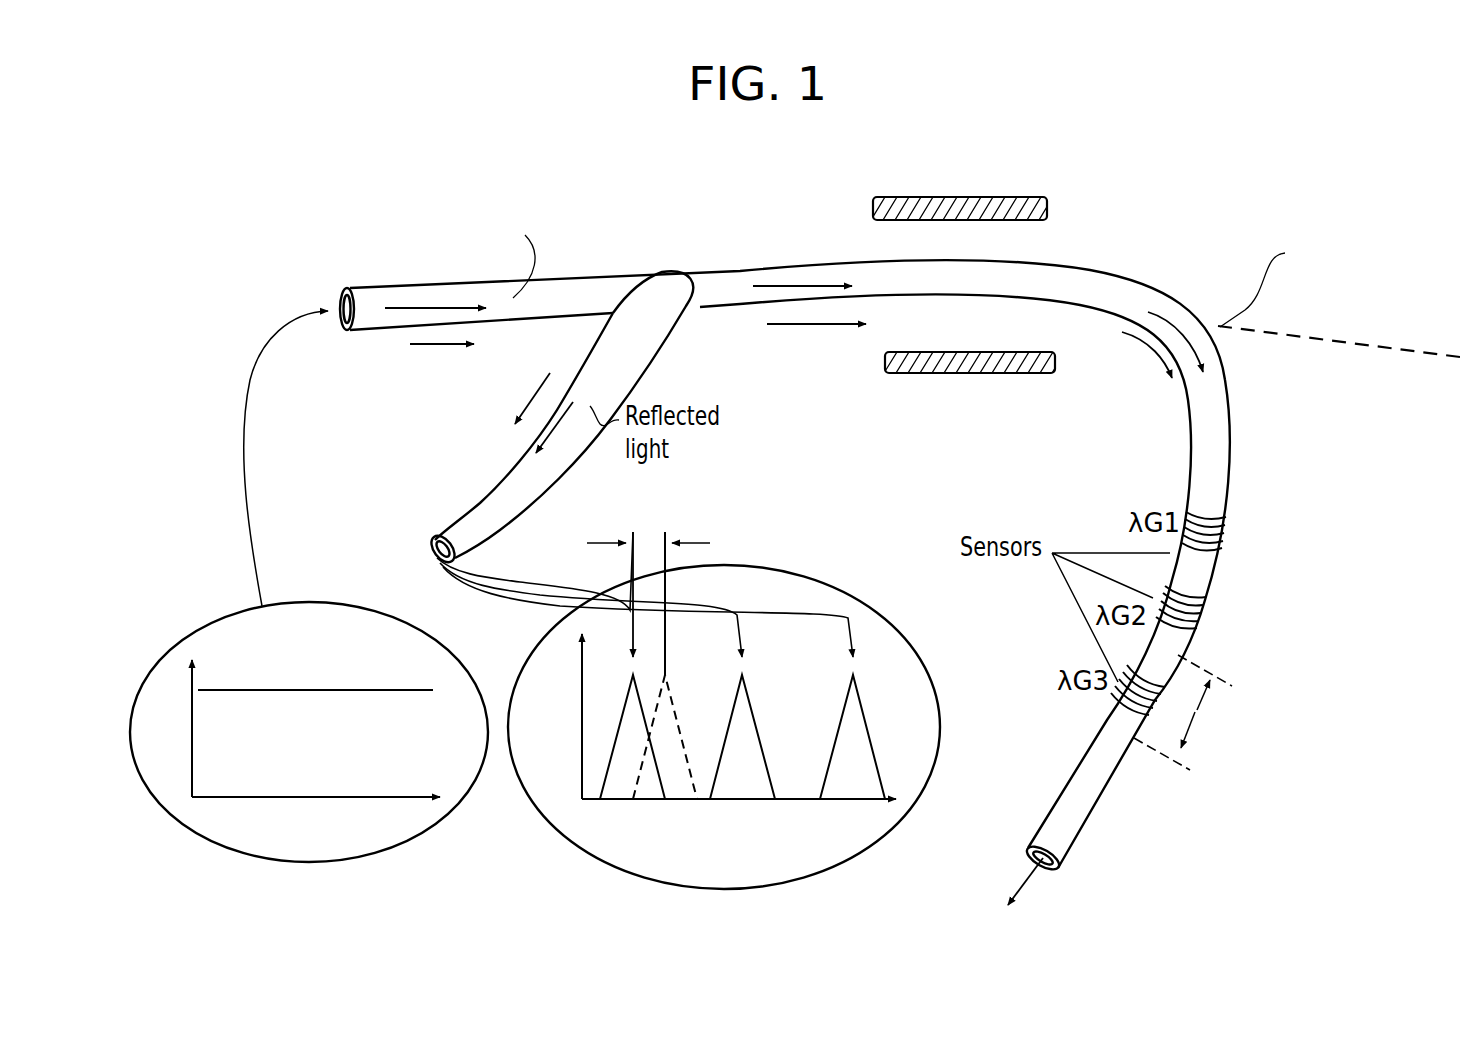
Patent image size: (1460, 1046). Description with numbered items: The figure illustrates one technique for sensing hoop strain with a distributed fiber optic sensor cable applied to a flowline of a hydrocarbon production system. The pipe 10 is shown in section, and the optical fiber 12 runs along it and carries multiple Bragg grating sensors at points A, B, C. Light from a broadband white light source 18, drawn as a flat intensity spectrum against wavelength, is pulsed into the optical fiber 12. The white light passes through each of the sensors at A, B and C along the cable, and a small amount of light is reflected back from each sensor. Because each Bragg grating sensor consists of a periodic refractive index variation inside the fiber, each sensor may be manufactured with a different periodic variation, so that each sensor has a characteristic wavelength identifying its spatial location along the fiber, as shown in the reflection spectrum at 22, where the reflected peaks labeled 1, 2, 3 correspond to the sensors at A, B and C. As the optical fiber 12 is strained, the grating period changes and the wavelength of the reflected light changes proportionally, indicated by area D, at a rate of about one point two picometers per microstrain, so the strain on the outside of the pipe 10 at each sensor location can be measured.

The pipe 10 is at (975, 198).
The distributed fiber optic sensor cable 12 is at (1363, 345).
The broadband white light source 18 is at (222, 620).
The reflected wavelength spectrum 22 is at (688, 689).
The first sensor A is at (1228, 542).
The second sensor B is at (1209, 622).
The third sensor C is at (1211, 783).
The wavelength shift area D is at (647, 537).
The reflection peak 1 is at (535, 594).
The reflection peak 2 is at (591, 610).
The reflection peak 3 is at (648, 612).